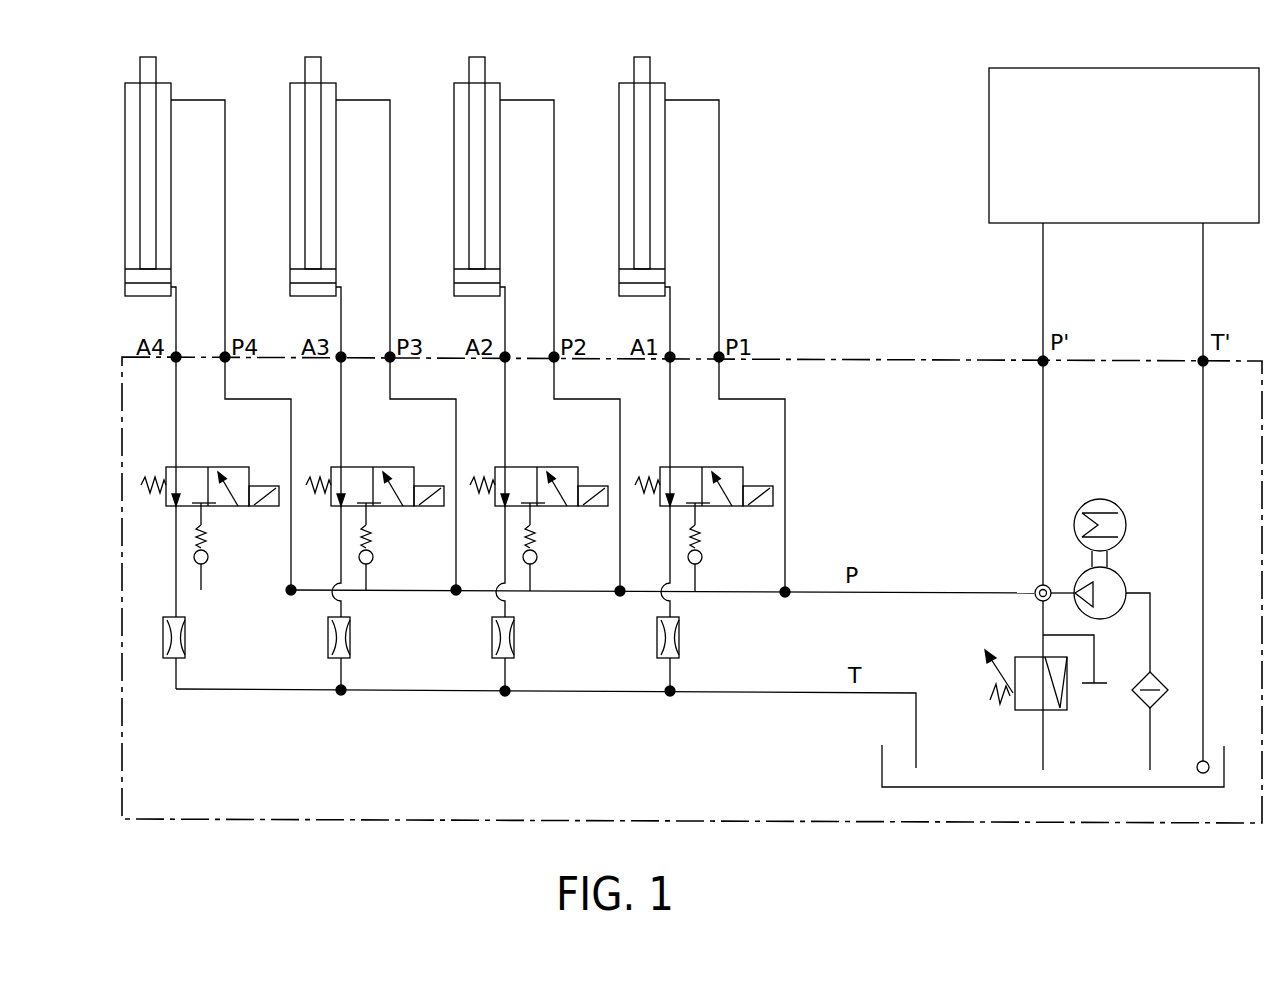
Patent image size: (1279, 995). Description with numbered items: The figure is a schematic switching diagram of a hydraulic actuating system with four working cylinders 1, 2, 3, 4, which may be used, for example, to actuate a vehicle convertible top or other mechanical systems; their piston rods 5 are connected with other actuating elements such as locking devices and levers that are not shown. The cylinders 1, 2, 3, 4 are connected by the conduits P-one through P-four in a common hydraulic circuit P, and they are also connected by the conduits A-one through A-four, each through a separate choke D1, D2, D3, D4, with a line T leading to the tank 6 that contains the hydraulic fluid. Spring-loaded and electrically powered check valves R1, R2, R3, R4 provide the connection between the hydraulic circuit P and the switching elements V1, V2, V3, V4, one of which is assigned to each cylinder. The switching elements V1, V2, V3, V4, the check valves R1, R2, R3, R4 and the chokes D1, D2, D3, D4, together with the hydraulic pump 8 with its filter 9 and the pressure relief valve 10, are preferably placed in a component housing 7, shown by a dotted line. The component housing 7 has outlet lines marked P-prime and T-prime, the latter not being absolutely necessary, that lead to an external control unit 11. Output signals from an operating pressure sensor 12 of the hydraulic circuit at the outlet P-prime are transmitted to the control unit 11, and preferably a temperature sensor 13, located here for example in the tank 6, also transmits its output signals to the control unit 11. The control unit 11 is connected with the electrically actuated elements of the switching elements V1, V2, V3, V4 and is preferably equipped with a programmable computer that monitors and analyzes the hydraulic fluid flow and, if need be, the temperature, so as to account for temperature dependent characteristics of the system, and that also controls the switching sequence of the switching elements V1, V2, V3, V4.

The cylinder 1 is at (631, 189).
The cylinder 2 is at (463, 189).
The cylinder 3 is at (299, 189).
The cylinder 4 is at (130, 173).
The piston rod 5 is at (150, 66).
The tank 6 is at (1010, 788).
The component housing 7 is at (702, 822).
The hydraulic pump 8 is at (1115, 588).
The filter 9 is at (1145, 702).
The pressure relief valve 10 is at (1030, 703).
The control unit 11 is at (1003, 112).
The operating pressure sensor 12 is at (1036, 587).
The temperature sensor 13 is at (1208, 762).
The switching element V1 is at (705, 483).
The switching element V2 is at (540, 483).
The switching element V3 is at (376, 483).
The switching element V4 is at (211, 483).
The check valve R1 is at (712, 547).
The check valve R2 is at (547, 547).
The check valve R3 is at (383, 546).
The check valve R4 is at (218, 546).
The choke D1 is at (685, 654).
The choke D2 is at (520, 654).
The choke D3 is at (356, 653).
The choke D4 is at (191, 653).